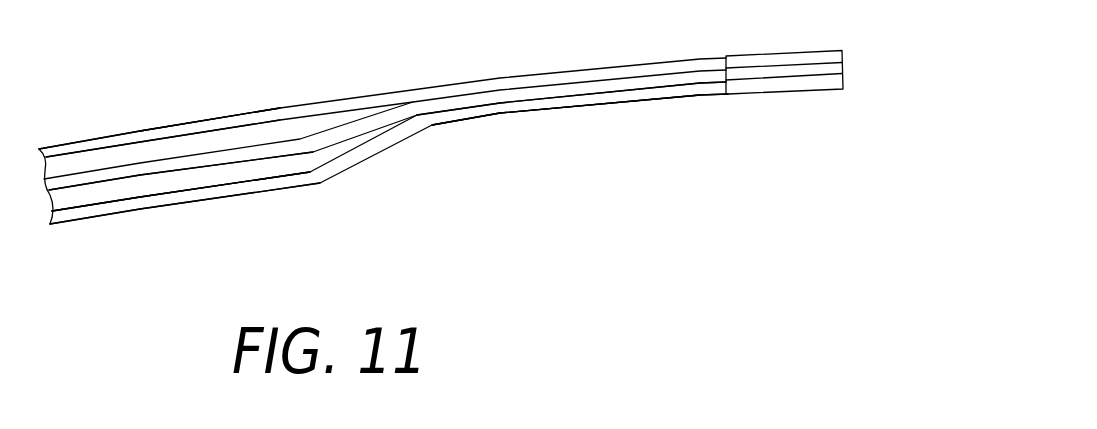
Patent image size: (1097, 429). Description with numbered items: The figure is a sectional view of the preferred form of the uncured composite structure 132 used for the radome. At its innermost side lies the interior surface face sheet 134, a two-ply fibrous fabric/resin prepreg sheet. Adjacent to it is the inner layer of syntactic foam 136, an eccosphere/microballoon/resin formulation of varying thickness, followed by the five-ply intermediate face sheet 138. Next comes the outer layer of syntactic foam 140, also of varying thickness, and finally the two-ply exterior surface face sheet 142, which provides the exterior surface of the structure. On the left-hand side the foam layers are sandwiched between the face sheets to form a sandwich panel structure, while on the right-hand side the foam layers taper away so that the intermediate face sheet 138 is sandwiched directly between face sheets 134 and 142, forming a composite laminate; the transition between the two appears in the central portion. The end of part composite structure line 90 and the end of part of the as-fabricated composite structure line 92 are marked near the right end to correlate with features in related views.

The end of part composite structure line 90 is at (728, 62).
The end of part of the as-fabricated composite structure line 92 is at (845, 62).
The uncured composite structure 132 is at (513, 117).
The interior surface face sheet 134 is at (565, 110).
The inner layer of syntactic foam 136 is at (218, 187).
The intermediate face sheet 138 is at (97, 187).
The outer layer of syntactic foam 140 is at (125, 140).
The exterior surface face sheet 142 is at (230, 116).